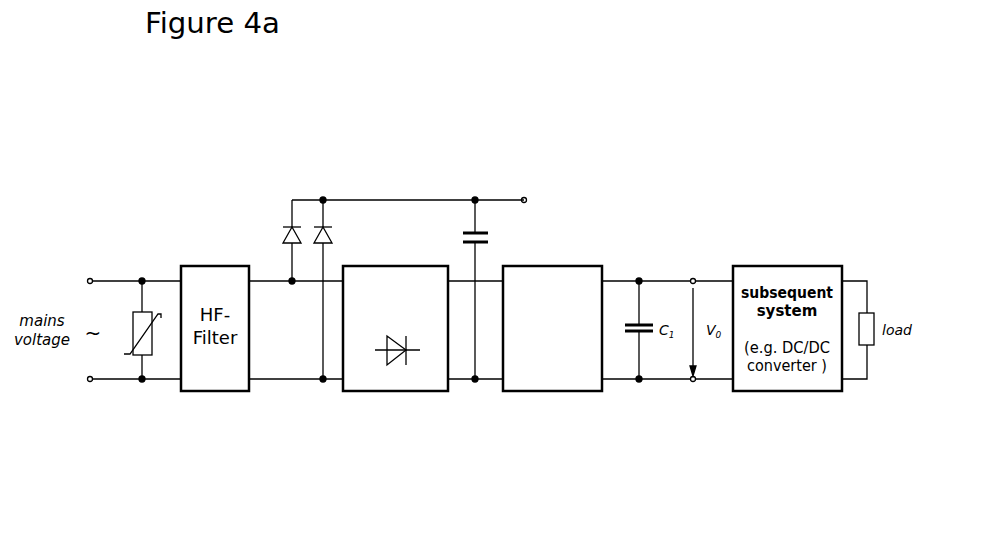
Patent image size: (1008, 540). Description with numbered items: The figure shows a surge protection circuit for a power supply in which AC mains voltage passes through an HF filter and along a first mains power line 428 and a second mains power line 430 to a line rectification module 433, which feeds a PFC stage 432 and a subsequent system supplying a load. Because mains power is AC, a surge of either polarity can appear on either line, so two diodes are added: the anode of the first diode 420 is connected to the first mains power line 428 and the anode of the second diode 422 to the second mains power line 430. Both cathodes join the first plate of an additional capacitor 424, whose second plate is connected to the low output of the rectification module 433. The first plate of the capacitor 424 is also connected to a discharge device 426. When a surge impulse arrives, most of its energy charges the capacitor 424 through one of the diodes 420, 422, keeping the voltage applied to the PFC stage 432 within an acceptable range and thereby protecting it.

The first diode D1 420 is at (285, 225).
The second diode D2 422 is at (327, 226).
The capacitor C2 424 is at (482, 232).
The discharge device 426 is at (606, 196).
The first mains power line 428 is at (282, 278).
The second mains power line 430 is at (287, 380).
The PFC stage 432 is at (552, 392).
The rectification module 433 is at (396, 392).